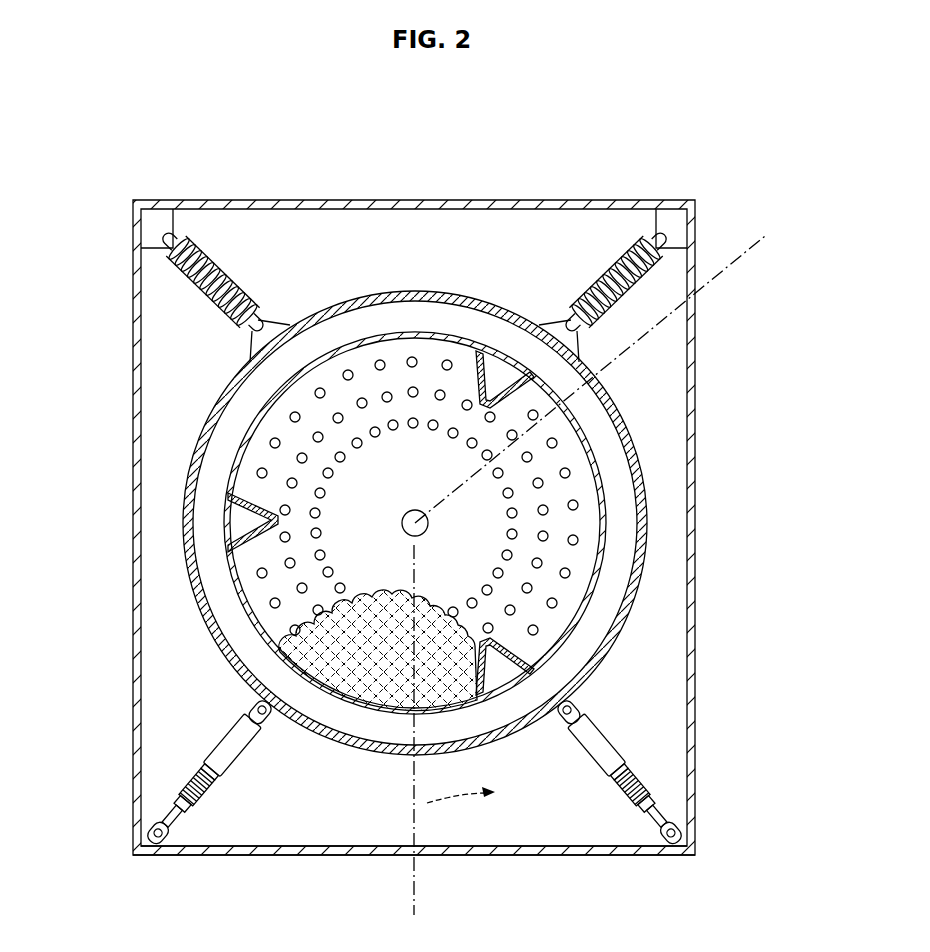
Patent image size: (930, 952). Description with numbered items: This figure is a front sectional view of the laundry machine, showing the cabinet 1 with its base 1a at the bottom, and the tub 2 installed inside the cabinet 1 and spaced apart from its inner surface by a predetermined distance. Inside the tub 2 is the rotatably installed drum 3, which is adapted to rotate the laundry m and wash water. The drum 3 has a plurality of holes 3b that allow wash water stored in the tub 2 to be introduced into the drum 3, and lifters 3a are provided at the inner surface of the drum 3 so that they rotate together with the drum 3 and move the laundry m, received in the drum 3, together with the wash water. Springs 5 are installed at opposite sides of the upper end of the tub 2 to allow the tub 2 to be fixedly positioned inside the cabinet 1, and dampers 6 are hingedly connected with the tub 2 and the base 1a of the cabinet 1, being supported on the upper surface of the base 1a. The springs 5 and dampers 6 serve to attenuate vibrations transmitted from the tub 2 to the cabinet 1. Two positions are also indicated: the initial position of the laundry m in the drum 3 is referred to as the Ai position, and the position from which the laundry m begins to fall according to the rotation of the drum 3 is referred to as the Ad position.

The cabinet 1 is at (706, 320).
The base 1a is at (635, 848).
The tub 2 is at (600, 660).
The drum 3 is at (598, 472).
The lifters 3a is at (517, 393).
The holes 3b is at (573, 505).
The springs 5 is at (197, 283).
The dampers 6 is at (220, 760).
The laundry m is at (355, 683).
The Ad position Ad is at (607, 367).
The Ai position Ai is at (447, 748).